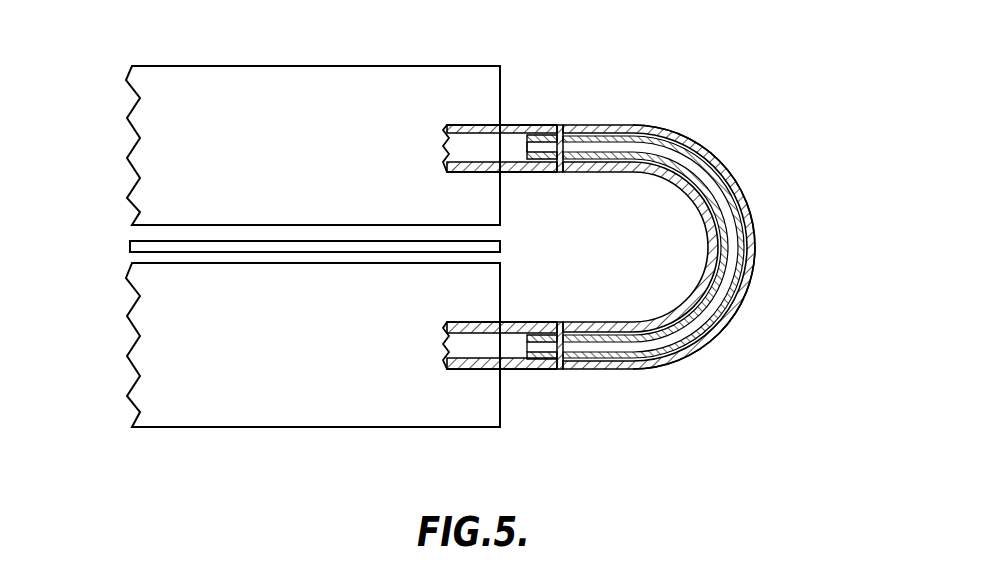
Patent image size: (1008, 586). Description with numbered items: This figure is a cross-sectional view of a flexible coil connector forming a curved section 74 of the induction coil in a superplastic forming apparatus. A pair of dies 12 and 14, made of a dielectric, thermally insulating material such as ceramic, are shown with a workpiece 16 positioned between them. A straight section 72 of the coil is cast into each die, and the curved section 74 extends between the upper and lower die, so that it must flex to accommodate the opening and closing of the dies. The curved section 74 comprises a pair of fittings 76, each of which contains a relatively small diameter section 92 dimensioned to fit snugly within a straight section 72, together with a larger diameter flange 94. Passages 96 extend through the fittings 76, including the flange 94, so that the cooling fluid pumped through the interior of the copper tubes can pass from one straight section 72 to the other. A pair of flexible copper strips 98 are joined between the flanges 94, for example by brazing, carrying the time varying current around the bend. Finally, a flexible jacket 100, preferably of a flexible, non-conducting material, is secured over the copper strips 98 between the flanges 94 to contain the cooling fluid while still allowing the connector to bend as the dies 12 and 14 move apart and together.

The die 12 is at (314, 165).
The die 14 is at (314, 366).
The workpiece 16 is at (130, 246).
The straight section 72 is at (467, 125).
The curved section 74 is at (737, 151).
The fitting 76 is at (550, 116).
The small diameter section 92 is at (537, 125).
The flange 94 is at (563, 132).
The passage 96 is at (528, 166).
The flexible copper strip 98 is at (652, 138).
The flexible jacket 100 is at (755, 247).